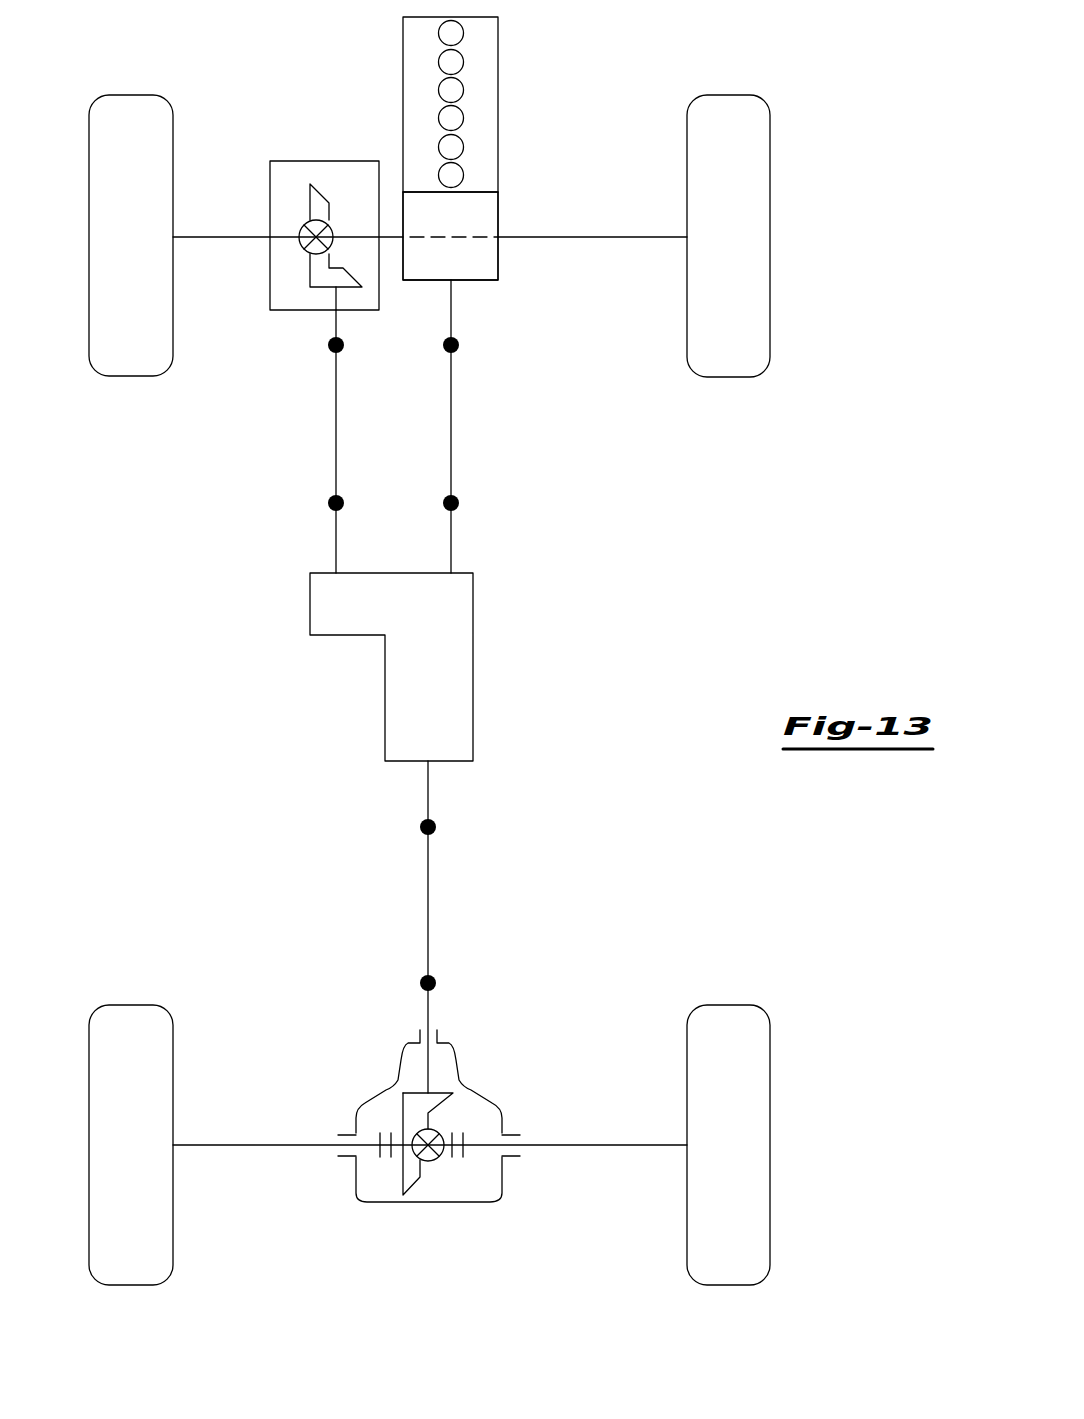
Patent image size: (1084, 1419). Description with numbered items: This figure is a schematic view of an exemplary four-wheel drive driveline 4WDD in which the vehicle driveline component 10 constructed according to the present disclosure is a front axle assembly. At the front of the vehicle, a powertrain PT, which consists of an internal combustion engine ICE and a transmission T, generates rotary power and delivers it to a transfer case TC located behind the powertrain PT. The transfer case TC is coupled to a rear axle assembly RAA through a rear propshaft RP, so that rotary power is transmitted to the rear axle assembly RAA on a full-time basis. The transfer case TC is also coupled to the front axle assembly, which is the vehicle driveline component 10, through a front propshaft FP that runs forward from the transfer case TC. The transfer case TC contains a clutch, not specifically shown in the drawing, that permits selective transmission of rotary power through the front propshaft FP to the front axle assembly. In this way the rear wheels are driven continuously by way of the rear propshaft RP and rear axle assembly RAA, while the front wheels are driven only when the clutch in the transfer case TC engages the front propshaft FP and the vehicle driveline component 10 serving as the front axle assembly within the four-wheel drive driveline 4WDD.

The four-wheel drive driveline 4WDD is at (228, 683).
The powertrain PT is at (525, 148).
The internal combustion engine ICE is at (487, 105).
The transmission T is at (482, 212).
The vehicle driveline component 10 is at (279, 318).
The front propshaft FP is at (335, 428).
The transfer case TC is at (458, 672).
The rear propshaft RP is at (428, 881).
The rear axle assembly RAA is at (509, 1050).